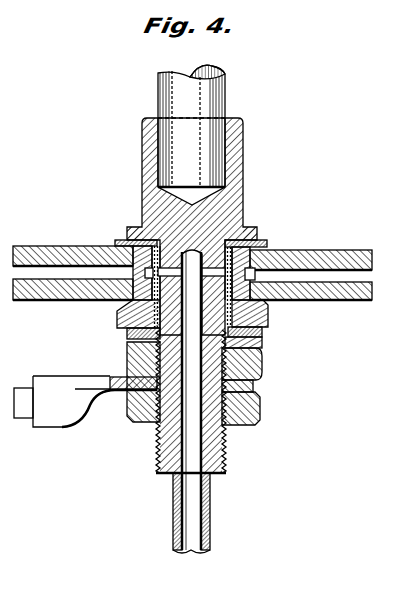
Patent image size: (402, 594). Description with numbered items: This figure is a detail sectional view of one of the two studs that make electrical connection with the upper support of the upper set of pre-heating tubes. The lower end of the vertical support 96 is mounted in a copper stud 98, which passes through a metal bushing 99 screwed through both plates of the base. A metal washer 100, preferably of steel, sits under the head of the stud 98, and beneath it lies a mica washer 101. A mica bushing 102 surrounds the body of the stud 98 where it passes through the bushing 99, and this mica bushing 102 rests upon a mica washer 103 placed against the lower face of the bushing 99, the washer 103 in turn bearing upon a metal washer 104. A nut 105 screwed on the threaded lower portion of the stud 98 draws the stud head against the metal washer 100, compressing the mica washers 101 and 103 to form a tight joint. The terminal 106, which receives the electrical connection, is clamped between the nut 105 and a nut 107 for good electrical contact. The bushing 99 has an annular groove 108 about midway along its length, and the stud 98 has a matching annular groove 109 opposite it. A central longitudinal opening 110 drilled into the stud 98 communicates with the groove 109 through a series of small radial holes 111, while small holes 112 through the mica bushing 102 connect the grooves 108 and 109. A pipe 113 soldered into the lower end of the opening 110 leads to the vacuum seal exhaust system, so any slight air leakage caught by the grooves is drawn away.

The vertical support 96 is at (208, 112).
The copper stud 98 is at (240, 178).
The metal bushing 99 is at (264, 332).
The metal washer 100 is at (252, 232).
The mica washer 101 is at (258, 243).
The mica bushing 102 is at (269, 309).
The mica washer 103 is at (262, 356).
The metal washer 104 is at (127, 340).
The nut 105 is at (254, 382).
The terminal 106 is at (57, 410).
The nut 107 is at (250, 426).
The annular groove 108 is at (137, 271).
The annular groove 109 is at (117, 313).
The central longitudinal opening 110 is at (157, 428).
The small holes 111 is at (168, 250).
The small holes 112 is at (263, 250).
The pipe 113 is at (173, 501).